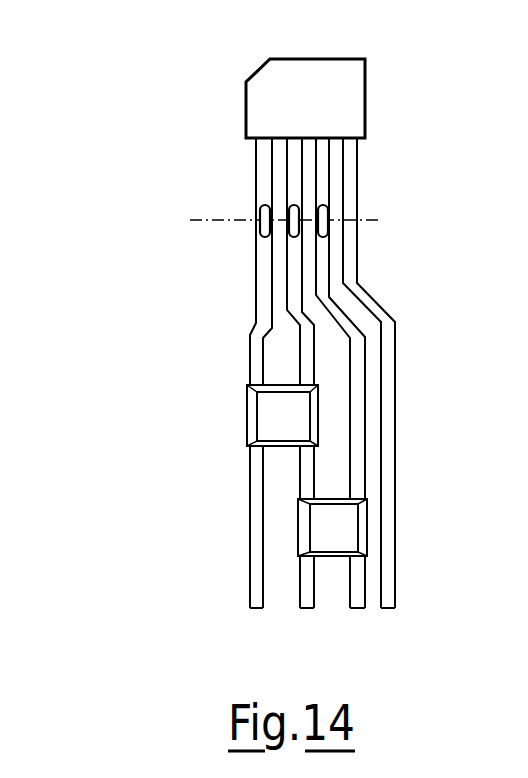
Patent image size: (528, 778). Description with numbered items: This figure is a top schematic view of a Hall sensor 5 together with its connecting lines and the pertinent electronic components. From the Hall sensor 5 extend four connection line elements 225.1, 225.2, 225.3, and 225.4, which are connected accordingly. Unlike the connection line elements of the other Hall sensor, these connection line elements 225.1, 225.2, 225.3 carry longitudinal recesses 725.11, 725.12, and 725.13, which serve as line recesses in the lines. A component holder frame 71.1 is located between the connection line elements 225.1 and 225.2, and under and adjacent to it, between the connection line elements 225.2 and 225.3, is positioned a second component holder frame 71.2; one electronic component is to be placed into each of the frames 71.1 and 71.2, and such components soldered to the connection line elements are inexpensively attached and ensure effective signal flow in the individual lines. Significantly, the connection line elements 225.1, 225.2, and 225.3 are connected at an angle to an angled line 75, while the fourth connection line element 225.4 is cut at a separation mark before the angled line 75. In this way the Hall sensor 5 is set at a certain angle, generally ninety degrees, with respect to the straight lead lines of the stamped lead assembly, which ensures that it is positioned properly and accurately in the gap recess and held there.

The Hall sensor 5 is at (312, 67).
The connection line element 225.1 is at (262, 172).
The connection line element 225.2 is at (292, 150).
The connection line element 225.3 is at (322, 167).
The connection line element 225.4 is at (350, 200).
The longitudinal recess 725.11 is at (252, 223).
The longitudinal recess 725.12 is at (286, 229).
The longitudinal recess 725.13 is at (316, 231).
The angled line 75 is at (375, 225).
The component holder frame 71.1 is at (258, 412).
The component holder frame 71.2 is at (318, 518).